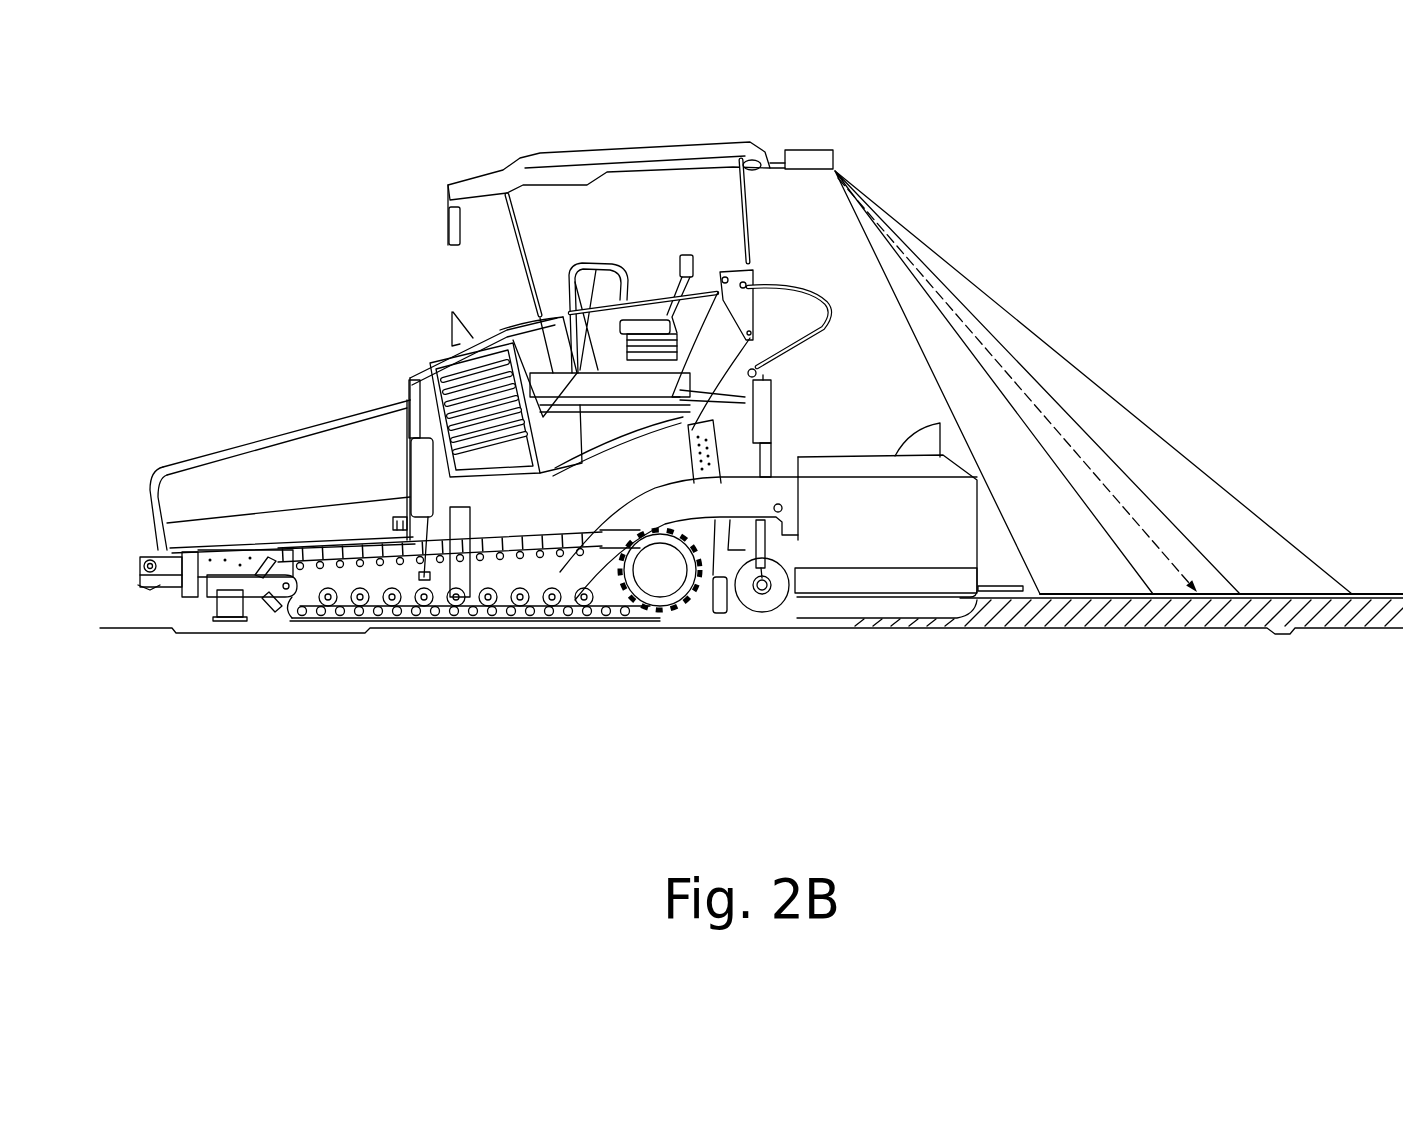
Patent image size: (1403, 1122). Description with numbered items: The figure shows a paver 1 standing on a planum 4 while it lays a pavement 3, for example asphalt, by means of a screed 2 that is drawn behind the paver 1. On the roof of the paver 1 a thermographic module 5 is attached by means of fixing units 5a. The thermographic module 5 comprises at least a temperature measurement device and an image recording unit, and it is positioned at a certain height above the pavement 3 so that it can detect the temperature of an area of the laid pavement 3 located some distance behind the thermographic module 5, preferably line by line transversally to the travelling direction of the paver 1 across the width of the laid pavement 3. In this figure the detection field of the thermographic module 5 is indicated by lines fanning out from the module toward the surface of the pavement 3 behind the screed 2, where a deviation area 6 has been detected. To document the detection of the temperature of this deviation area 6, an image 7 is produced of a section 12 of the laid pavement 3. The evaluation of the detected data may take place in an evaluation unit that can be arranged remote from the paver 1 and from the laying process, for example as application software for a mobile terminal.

The paver 1 is at (380, 316).
The screed 2 is at (873, 443).
The pavement 3 is at (1043, 620).
The planum 4 is at (406, 632).
The thermographic module 5 is at (832, 146).
The fixing units 5a is at (777, 150).
The deviation area 6 is at (1205, 598).
The image 7 is at (1180, 500).
The section 12 is at (1277, 590).